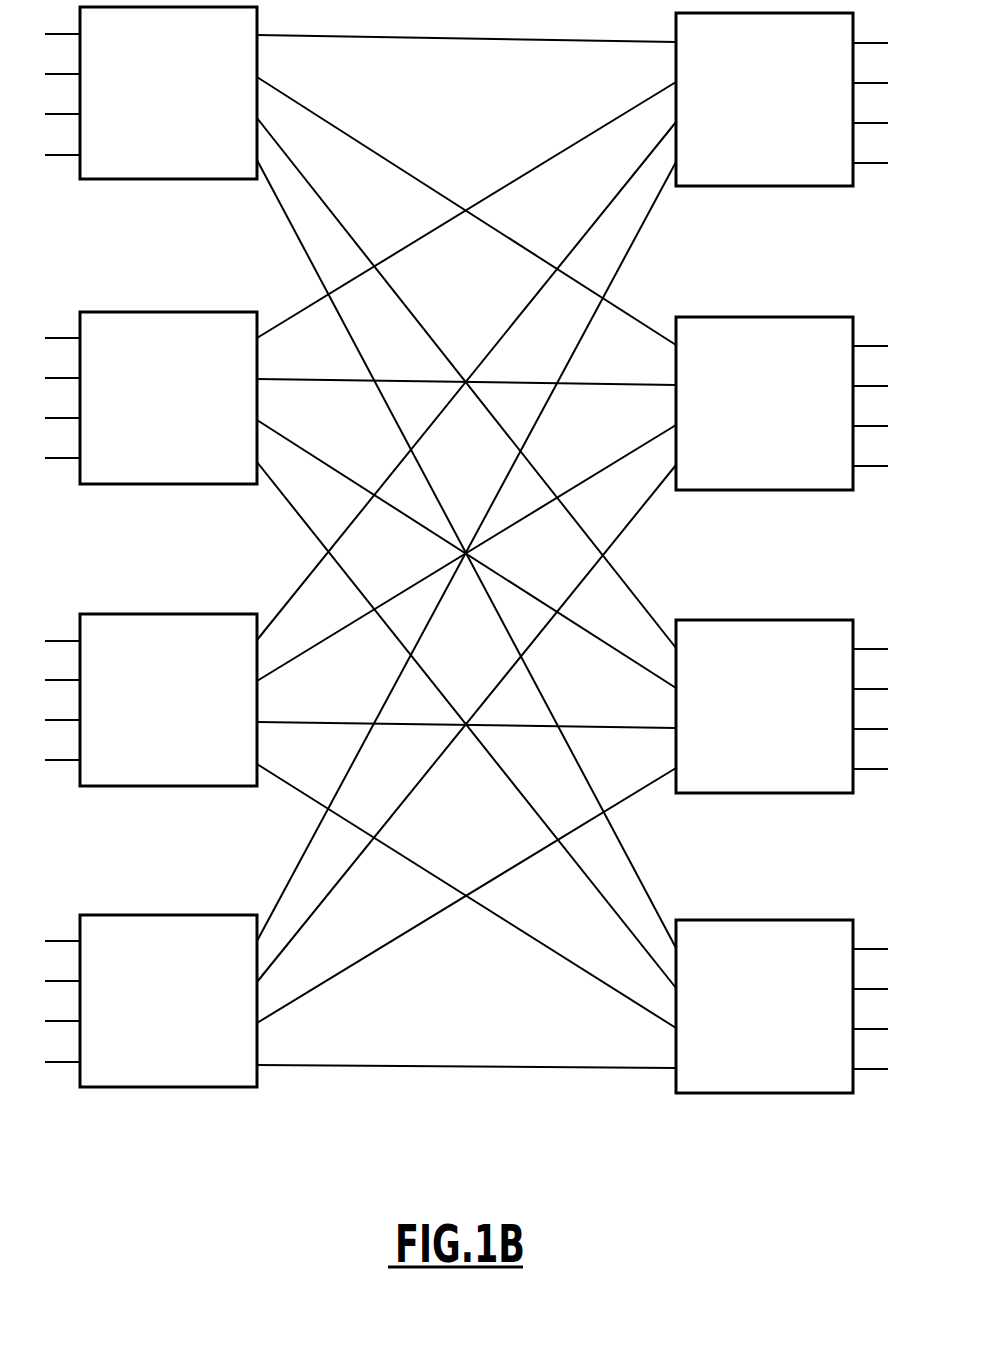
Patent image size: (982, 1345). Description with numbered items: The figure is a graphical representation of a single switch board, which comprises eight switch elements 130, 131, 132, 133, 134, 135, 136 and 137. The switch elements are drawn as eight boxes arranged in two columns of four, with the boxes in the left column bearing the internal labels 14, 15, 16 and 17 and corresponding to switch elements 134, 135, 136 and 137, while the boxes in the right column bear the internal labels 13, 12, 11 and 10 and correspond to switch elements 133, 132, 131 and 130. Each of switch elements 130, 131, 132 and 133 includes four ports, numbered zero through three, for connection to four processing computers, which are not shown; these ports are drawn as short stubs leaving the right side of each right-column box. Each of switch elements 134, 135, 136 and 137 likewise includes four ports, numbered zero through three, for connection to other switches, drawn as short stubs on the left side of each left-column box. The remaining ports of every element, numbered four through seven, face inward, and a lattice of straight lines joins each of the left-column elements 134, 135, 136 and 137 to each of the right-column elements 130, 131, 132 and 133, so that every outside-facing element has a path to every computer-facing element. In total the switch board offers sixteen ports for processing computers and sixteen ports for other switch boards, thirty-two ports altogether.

The switch element 10 is at (764, 1006).
The switch element 11 is at (764, 706).
The switch element 12 is at (764, 403).
The switch element 13 is at (764, 99).
The switch element 14 is at (168, 93).
The switch element 15 is at (168, 398).
The switch element 16 is at (168, 700).
The switch element 17 is at (168, 1001).
The switch element 130 is at (782, 1033).
The switch element 131 is at (782, 733).
The switch element 132 is at (782, 430).
The switch element 133 is at (782, 125).
The switch element 134 is at (151, 120).
The switch element 135 is at (151, 425).
The switch element 136 is at (151, 728).
The switch element 137 is at (151, 1029).